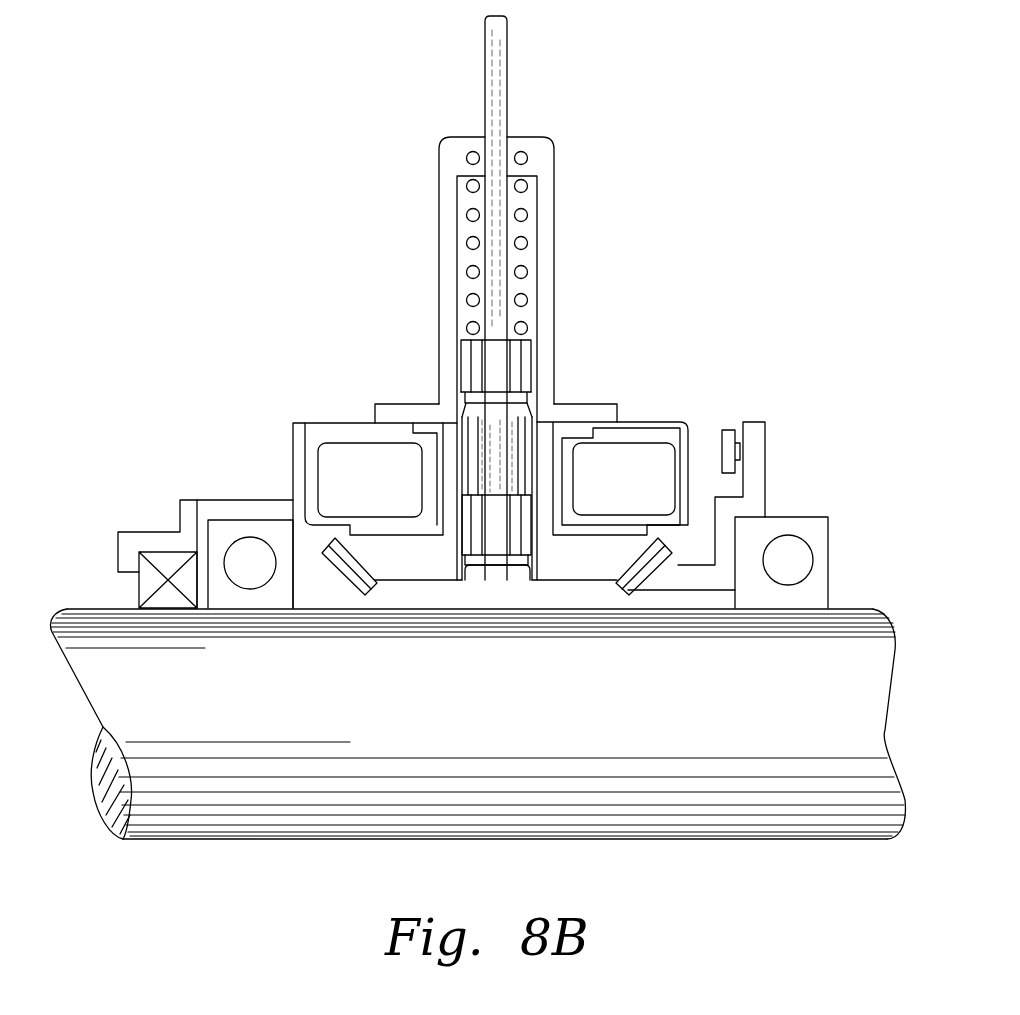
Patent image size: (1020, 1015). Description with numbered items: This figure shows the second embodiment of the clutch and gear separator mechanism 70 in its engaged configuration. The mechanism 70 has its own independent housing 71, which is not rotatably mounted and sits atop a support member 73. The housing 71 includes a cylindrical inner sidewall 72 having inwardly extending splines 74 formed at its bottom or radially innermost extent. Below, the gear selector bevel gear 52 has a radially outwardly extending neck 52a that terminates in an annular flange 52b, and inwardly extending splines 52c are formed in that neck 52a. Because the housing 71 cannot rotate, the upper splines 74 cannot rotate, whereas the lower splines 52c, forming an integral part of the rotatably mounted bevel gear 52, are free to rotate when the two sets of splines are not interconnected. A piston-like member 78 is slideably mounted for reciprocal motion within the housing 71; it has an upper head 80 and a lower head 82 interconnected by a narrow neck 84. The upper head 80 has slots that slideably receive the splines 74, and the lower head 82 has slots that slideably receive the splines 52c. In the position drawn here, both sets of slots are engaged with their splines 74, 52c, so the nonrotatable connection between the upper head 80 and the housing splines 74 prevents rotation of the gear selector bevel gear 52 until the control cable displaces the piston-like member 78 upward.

The clutch and gear separator mechanism 70 is at (718, 156).
The independent housing 71 is at (439, 184).
The cylindrical inner sidewall 72 is at (460, 228).
The support member 73 is at (462, 478).
The splines 74 is at (461, 353).
The piston-like member 78 is at (516, 371).
The upper head 80 is at (502, 355).
The lower head 82 is at (512, 528).
The narrow neck 84 is at (527, 452).
The gear selector bevel gear 52 is at (397, 557).
The neck 52a is at (575, 452).
The annular flange 52b is at (547, 487).
The splines 52c is at (346, 486).